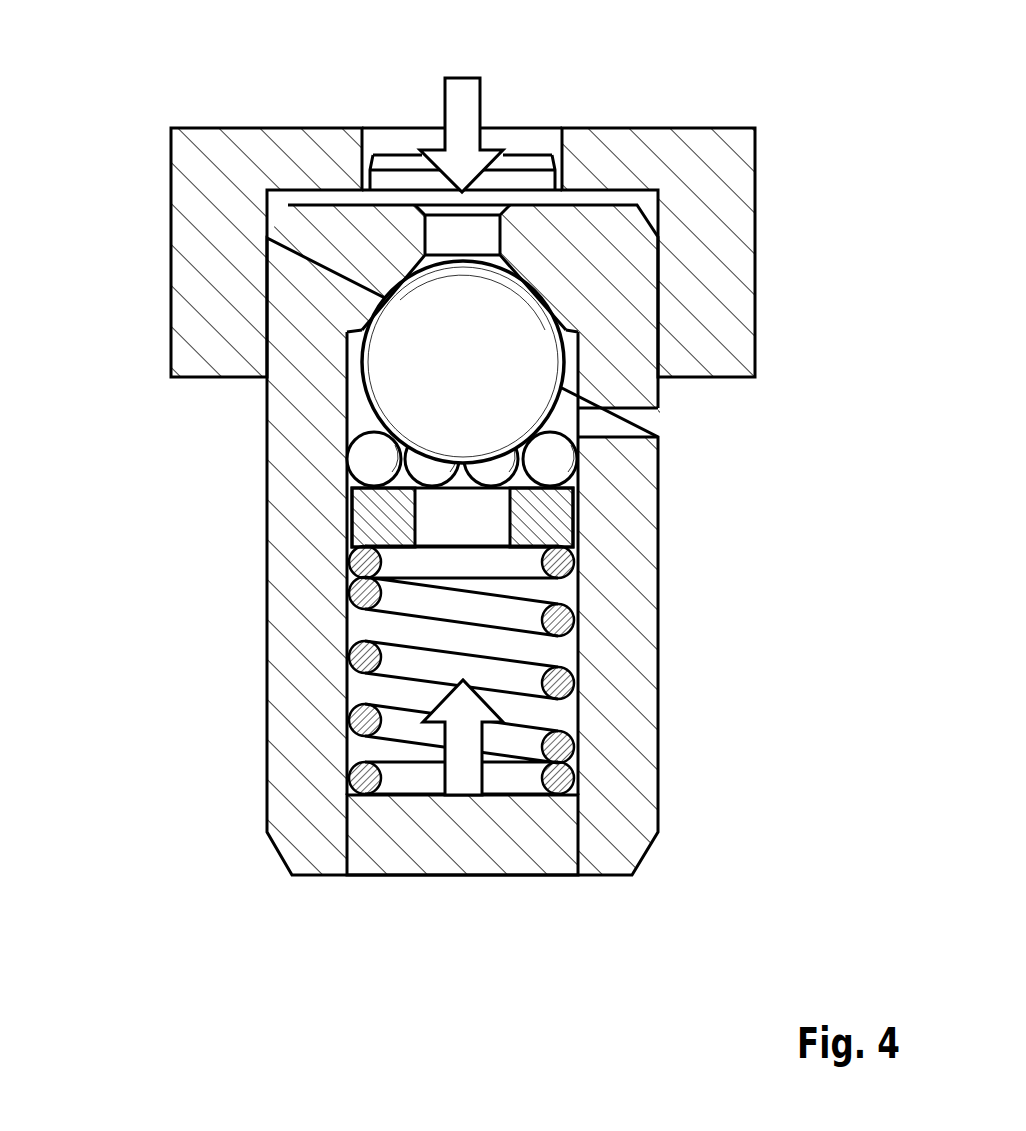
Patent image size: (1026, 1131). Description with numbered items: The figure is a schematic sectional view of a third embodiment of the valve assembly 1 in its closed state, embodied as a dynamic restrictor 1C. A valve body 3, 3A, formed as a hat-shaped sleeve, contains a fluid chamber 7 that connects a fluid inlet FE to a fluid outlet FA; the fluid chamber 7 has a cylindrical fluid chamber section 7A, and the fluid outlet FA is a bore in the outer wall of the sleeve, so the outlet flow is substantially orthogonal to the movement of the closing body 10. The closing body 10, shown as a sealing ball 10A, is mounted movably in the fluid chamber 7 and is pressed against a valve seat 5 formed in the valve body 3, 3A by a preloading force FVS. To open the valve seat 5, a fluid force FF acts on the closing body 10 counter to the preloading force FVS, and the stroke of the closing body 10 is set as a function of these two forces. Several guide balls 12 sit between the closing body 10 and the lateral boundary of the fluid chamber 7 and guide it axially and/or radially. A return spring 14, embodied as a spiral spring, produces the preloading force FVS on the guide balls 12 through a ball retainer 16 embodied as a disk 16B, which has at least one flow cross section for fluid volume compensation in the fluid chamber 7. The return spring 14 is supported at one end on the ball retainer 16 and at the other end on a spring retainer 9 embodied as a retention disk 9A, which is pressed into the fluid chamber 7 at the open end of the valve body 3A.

The valve assembly 1 is at (394, 200).
The dynamic restrictor 1C is at (137, 108).
The valve body 3 is at (503, 540).
The valve body 3A is at (628, 537).
The valve seat 5 is at (397, 288).
The fluid chamber 7 is at (387, 562).
The cylindrical fluid chamber section 7A is at (360, 695).
The spring retainer 9 is at (462, 870).
The retention disk 9A is at (465, 843).
The closing body 10 is at (607, 267).
The sealing ball 10A is at (527, 324).
The guide ball 12 is at (363, 462).
The return spring 14 is at (565, 682).
The ball retainer 16 is at (368, 517).
The disk 16B is at (363, 515).
The fluid outlet FA is at (645, 423).
The fluid inlet FE is at (397, 180).
The fluid force FF is at (462, 105).
The preloading force FVS is at (460, 760).